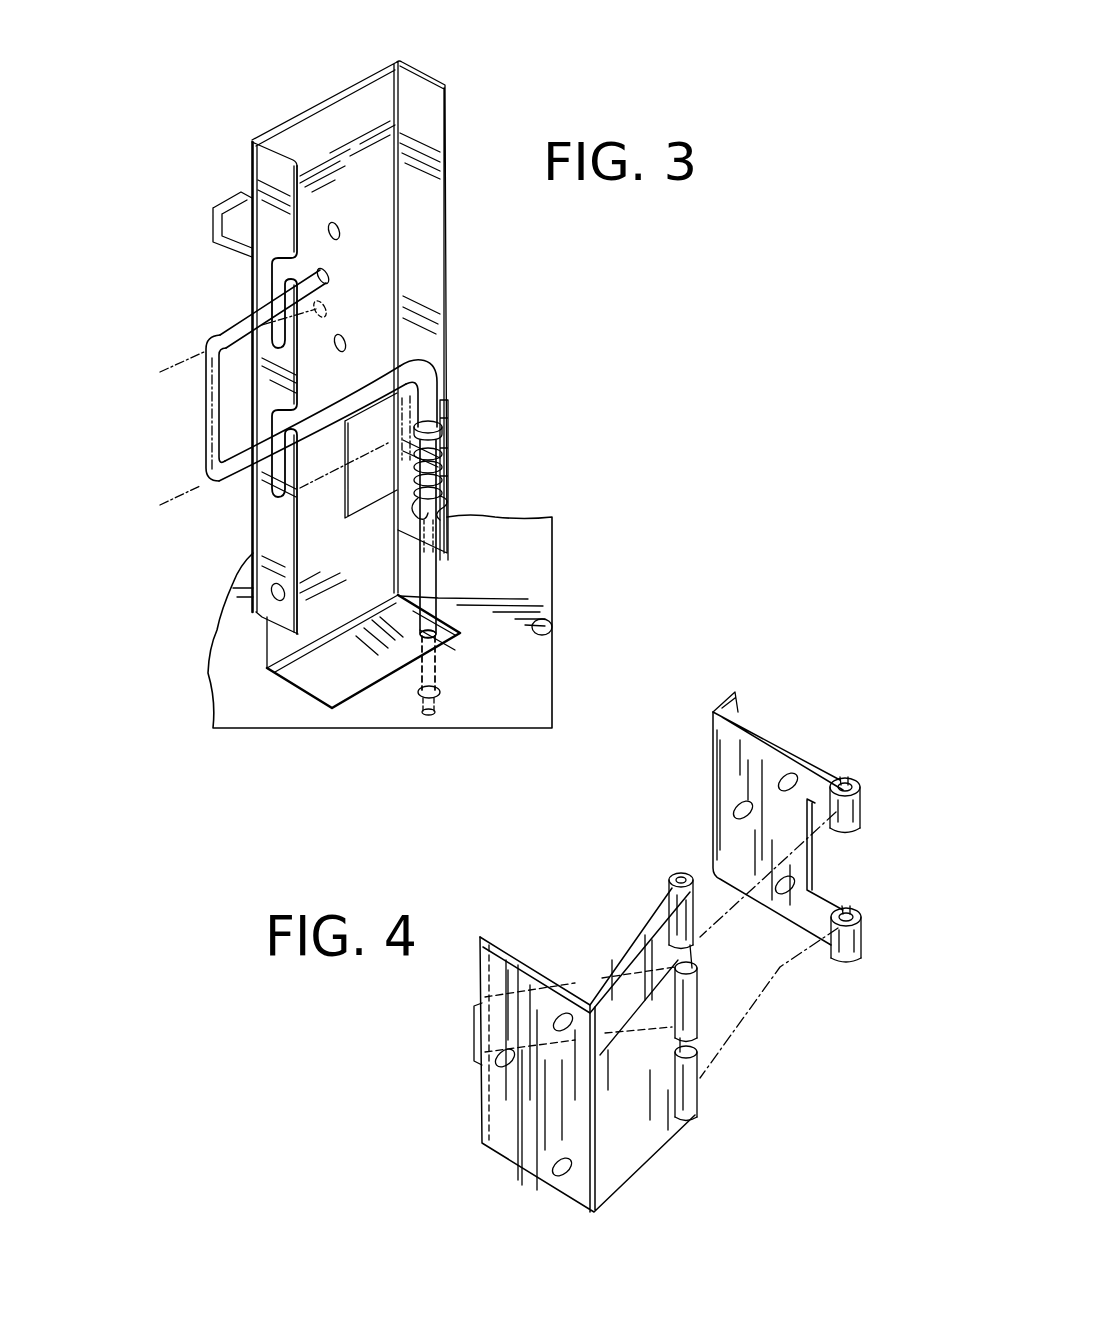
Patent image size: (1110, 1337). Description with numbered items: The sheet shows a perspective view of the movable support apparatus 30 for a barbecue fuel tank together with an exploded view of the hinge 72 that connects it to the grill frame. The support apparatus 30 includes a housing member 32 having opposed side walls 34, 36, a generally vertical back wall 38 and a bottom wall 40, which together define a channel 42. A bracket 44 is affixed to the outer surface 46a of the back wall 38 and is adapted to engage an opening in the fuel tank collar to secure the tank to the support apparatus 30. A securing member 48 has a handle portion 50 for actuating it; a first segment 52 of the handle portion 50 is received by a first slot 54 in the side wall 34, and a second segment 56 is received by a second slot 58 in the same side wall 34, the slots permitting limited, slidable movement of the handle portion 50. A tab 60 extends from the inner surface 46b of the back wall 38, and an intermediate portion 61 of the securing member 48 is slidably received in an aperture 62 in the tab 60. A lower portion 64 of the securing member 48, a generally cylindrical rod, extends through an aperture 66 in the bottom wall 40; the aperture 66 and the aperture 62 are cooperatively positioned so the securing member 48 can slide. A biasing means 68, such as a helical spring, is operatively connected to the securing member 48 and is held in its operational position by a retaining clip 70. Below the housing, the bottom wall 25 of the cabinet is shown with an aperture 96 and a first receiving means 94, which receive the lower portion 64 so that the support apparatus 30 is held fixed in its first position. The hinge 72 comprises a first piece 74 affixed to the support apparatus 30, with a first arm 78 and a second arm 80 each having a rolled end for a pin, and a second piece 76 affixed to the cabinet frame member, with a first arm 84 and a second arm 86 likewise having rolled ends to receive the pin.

In FIG. 3, the bottom wall 25 is at (522, 697).
In FIG. 3, the support apparatus 30 is at (540, 350).
In FIG. 3, the housing member 32 is at (325, 410).
In FIG. 3, the side wall 34 is at (275, 172).
In FIG. 3, the side wall 36 is at (425, 223).
In FIG. 3, the back wall 38 is at (368, 102).
In FIG. 3, the bottom wall 40 is at (328, 680).
In FIG. 3, the channel 42 is at (324, 130).
In FIG. 3, the bracket 44 is at (228, 238).
In FIG. 3, the outer surface 46a is at (172, 692).
In FIG. 3, the inner surface 46b is at (352, 609).
In FIG. 3, the securing member 48 is at (223, 388).
In FIG. 3, the handle portion 50 is at (208, 420).
In FIG. 3, the first segment 52 is at (258, 328).
In FIG. 3, the first slot 54 is at (262, 263).
In FIG. 3, the second segment 56 is at (253, 475).
In FIG. 3, the second slot 58 is at (262, 502).
In FIG. 3, the tab 60 is at (447, 420).
In FIG. 3, the intermediate portion 61 is at (440, 362).
In FIG. 3, the aperture 62 is at (445, 407).
In FIG. 3, the lower portion 64 is at (443, 657).
In FIG. 3, the aperture 66 is at (455, 605).
In FIG. 3, the biasing means 68 is at (447, 460).
In FIG. 3, the retaining clip 70 is at (446, 493).
In FIG. 4, the hinge 72 is at (632, 836).
In FIG. 4, the first piece 74 is at (470, 1120).
In FIG. 4, the second piece 76 is at (795, 740).
In FIG. 4, the first arm 78 is at (658, 908).
In FIG. 4, the second arm 80 is at (655, 1005).
In FIG. 4, the first arm 84 is at (860, 805).
In FIG. 4, the second arm 86 is at (862, 935).
In FIG. 3, the first receiving means 94 is at (552, 626).
In FIG. 3, the aperture 96 is at (422, 702).